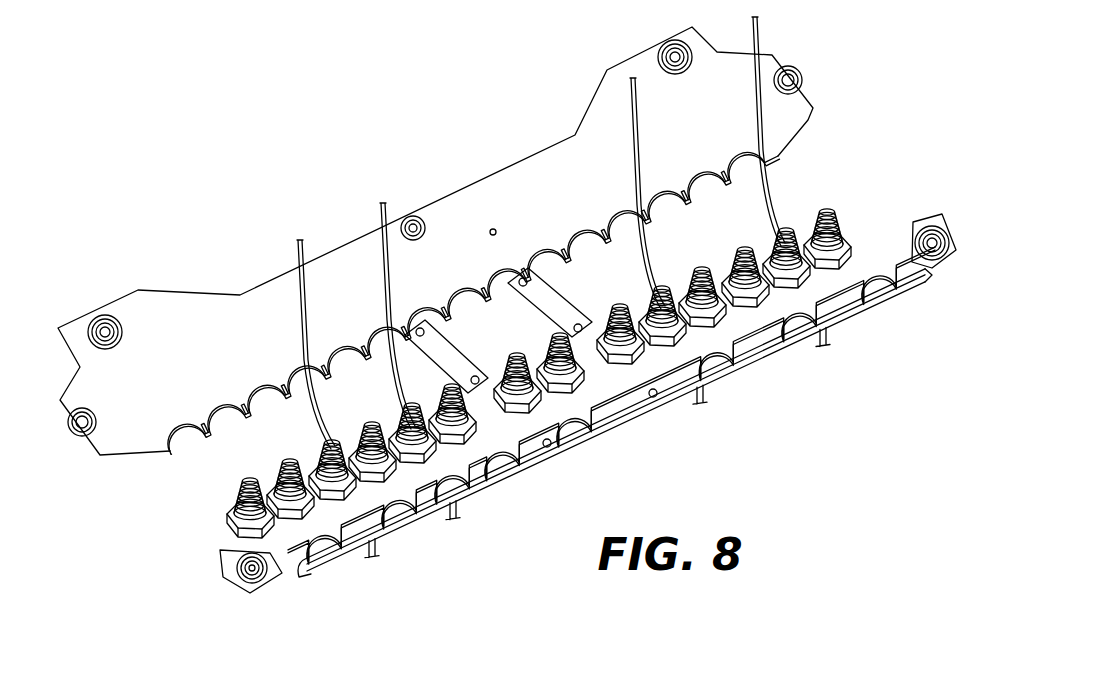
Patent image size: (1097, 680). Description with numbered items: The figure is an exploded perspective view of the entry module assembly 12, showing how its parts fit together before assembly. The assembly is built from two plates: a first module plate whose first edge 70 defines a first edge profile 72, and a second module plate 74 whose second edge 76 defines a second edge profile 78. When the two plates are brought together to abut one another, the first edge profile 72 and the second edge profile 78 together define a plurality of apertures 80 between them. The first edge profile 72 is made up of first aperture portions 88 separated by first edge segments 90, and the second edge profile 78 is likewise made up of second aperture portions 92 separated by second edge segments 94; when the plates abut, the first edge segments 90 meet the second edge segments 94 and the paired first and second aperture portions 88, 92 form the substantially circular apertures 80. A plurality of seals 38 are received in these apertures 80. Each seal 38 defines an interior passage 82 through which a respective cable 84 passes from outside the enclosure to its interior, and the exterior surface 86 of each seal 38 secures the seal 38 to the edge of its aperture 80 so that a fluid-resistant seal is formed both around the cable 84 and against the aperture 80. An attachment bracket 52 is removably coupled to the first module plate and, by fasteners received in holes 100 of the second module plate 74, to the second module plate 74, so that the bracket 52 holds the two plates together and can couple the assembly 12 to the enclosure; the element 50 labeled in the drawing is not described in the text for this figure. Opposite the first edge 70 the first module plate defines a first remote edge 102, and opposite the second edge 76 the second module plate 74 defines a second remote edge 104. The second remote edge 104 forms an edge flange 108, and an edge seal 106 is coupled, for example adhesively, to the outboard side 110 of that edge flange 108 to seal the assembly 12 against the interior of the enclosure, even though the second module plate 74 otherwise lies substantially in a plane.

The entry module assembly 12 is at (386, 116).
The seal 38 is at (408, 420).
The terminal block 50 is at (88, 14).
The attachment bracket 52 is at (455, 358).
The first edge 70 is at (130, 456).
The first edge profile 72 is at (521, 304).
The second module plate 74 is at (284, 571).
The second edge 76 is at (570, 386).
The second edge profile 78 is at (303, 545).
The aperture 80 is at (172, 10).
The interior passage 82 is at (328, 458).
The cable 84 is at (306, 246).
The exterior surface 86 is at (518, 362).
The first aperture portion 88 is at (282, 384).
The first edge segment 90 is at (204, 430).
The second aperture portion 92 is at (360, 541).
The second edge segment 94 is at (417, 520).
The hole 100 is at (549, 448).
The first remote edge 102 is at (612, 72).
The second remote edge 104 is at (299, 579).
The edge seal 106 is at (456, 525).
The edge flange 108 is at (614, 430).
The outboard side 110 is at (625, 448).